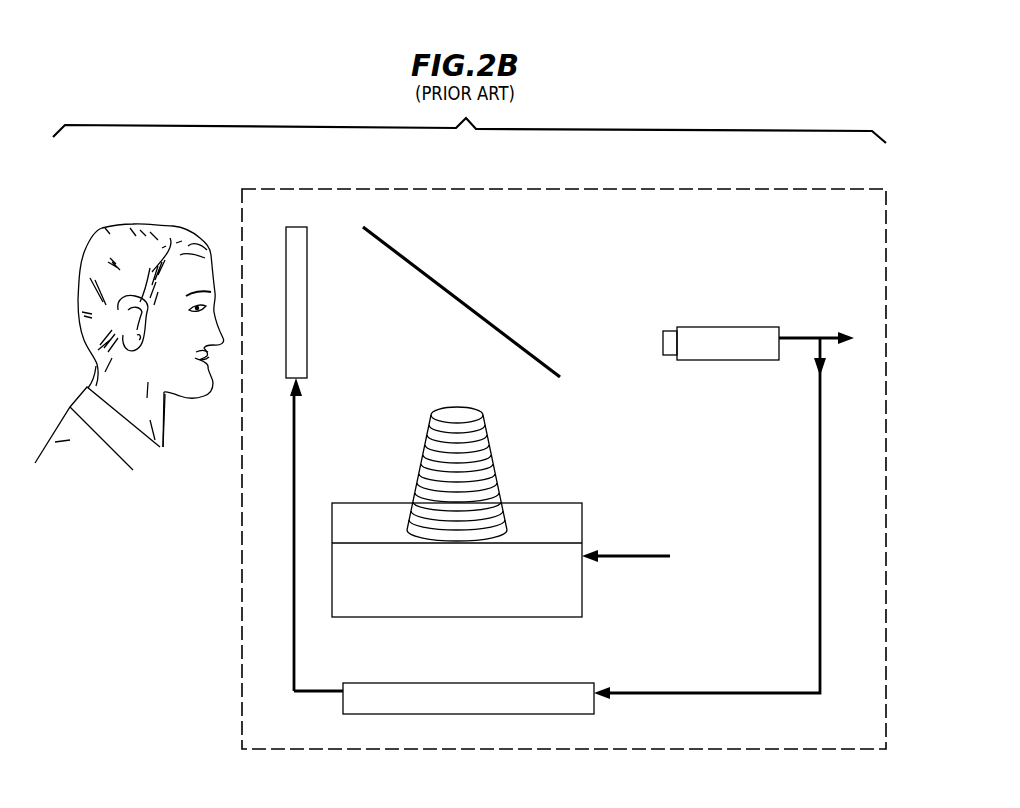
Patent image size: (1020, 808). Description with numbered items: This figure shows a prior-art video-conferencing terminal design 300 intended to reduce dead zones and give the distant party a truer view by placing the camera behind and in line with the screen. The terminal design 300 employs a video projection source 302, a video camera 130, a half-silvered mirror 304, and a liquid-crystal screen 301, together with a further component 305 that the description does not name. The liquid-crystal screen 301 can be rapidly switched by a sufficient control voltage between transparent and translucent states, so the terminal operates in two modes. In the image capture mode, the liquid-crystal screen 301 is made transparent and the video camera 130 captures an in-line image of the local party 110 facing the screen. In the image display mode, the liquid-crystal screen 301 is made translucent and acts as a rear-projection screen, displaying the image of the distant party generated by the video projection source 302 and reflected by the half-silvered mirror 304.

The local party 110 is at (115, 212).
The video-conferencing terminal design 300 is at (645, 189).
The liquid-crystal screen 301 is at (302, 227).
The video projection source 302 is at (530, 532).
The half-silvered mirror 304 is at (462, 298).
The controller 305 is at (377, 683).
The video camera 130 is at (711, 327).